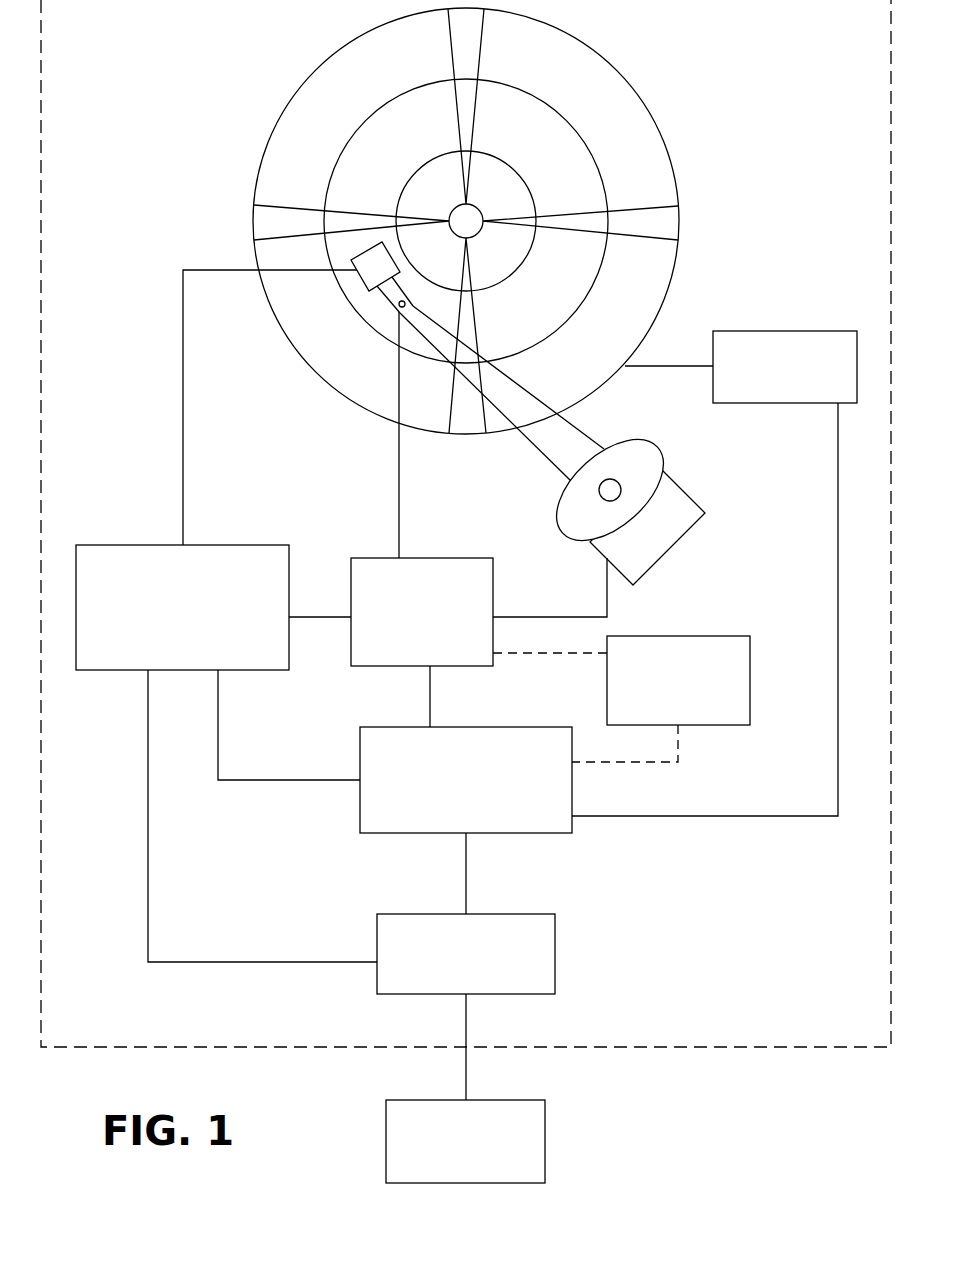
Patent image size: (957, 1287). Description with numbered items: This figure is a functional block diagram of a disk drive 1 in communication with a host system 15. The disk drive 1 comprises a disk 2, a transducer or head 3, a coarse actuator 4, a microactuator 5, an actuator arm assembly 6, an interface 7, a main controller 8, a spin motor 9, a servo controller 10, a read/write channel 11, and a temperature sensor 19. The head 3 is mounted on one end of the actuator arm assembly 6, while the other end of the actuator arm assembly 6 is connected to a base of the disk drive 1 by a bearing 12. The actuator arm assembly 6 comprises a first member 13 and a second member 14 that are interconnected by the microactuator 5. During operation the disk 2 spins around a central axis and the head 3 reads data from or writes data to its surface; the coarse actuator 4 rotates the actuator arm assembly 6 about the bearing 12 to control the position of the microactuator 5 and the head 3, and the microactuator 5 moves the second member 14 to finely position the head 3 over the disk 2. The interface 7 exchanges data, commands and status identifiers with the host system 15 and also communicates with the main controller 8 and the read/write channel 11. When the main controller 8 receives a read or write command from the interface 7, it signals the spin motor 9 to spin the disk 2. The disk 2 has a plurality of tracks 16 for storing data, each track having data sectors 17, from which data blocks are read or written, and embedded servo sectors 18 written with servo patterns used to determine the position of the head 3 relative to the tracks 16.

The disk drive 1 is at (783, 1047).
The disk 2 is at (465, 221).
The head 3 is at (362, 280).
The coarse actuator 4 is at (687, 528).
The microactuator 5 is at (397, 305).
The actuator arm assembly 6 is at (490, 344).
The interface 7 is at (555, 957).
The main controller 8 is at (518, 833).
The spin motor 9 is at (767, 331).
The servo controller 10 is at (348, 653).
The read/write channel 11 is at (253, 543).
The bearing 12 is at (613, 480).
The first member 13 is at (527, 447).
The second member 14 is at (405, 292).
The host system 15 is at (545, 1136).
The tracks 16 is at (397, 148).
The data sectors 17 is at (554, 58).
The embedded servo sectors 18 is at (660, 221).
The temperature sensor 19 is at (750, 670).